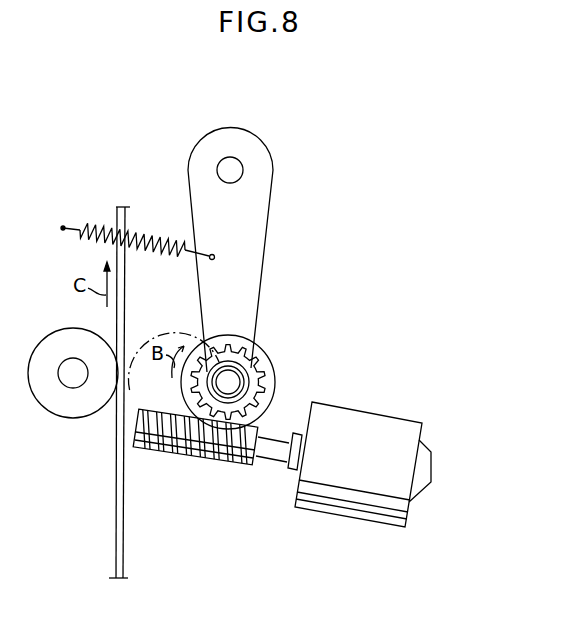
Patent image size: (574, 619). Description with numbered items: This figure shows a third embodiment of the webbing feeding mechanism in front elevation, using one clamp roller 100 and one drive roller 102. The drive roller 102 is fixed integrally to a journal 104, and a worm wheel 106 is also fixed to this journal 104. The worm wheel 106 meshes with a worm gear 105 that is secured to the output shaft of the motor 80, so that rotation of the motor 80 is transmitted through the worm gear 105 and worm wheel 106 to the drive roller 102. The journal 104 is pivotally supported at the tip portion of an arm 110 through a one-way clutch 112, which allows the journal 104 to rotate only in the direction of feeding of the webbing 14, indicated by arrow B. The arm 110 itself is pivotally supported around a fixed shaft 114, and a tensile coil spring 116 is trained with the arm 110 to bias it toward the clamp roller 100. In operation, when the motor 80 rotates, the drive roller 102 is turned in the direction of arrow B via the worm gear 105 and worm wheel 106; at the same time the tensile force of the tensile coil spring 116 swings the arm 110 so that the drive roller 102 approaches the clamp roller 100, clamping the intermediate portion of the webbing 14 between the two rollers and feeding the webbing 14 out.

The webbing 14 is at (125, 558).
The motor 80 is at (380, 412).
The clamp roller 100 is at (72, 418).
The drive roller 102 is at (227, 360).
The journal 104 is at (251, 362).
The worm gear 105 is at (218, 470).
The worm wheel 106 is at (268, 385).
The arm 110 is at (257, 250).
The one-way clutch 112 is at (232, 376).
The fixed shaft 114 is at (243, 172).
The tensile coil spring 116 is at (170, 238).